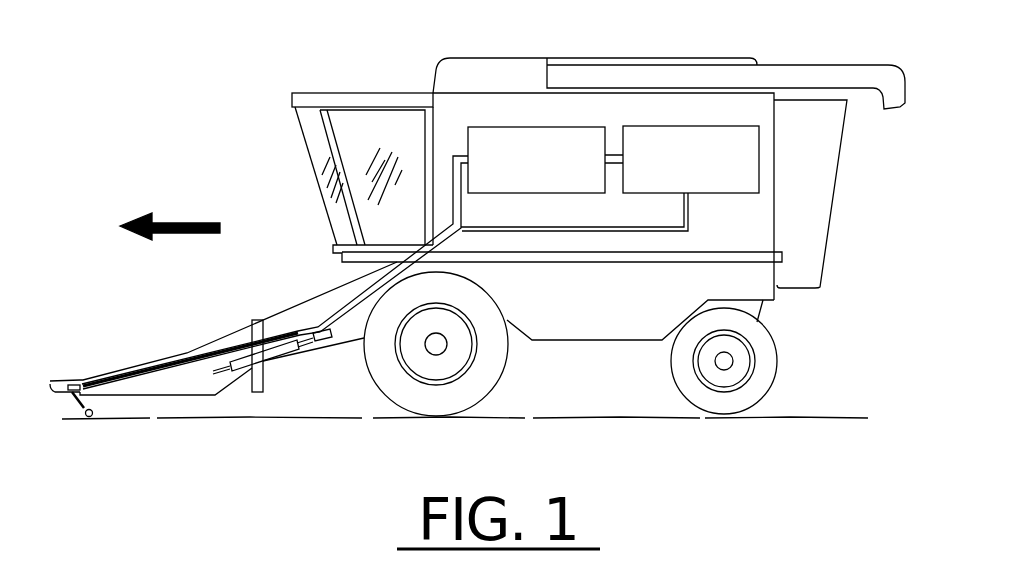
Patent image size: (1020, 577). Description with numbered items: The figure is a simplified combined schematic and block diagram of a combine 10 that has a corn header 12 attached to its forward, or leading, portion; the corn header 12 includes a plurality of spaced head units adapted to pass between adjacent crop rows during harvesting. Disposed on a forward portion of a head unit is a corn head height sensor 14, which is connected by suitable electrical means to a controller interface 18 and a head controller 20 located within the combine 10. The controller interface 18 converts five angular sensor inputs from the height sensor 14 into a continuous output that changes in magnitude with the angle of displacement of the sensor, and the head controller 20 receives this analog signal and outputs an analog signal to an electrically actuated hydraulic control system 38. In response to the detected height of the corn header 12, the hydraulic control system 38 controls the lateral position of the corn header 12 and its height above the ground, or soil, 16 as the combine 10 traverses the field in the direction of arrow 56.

The combine 10 is at (368, 60).
The corn header 12 is at (150, 358).
The corn head height sensor 14 is at (90, 403).
The ground 16 is at (555, 417).
The controller interface 18 is at (510, 127).
The head controller 20 is at (672, 126).
The hydraulic control system 38 is at (268, 387).
The arrow 56 is at (173, 223).